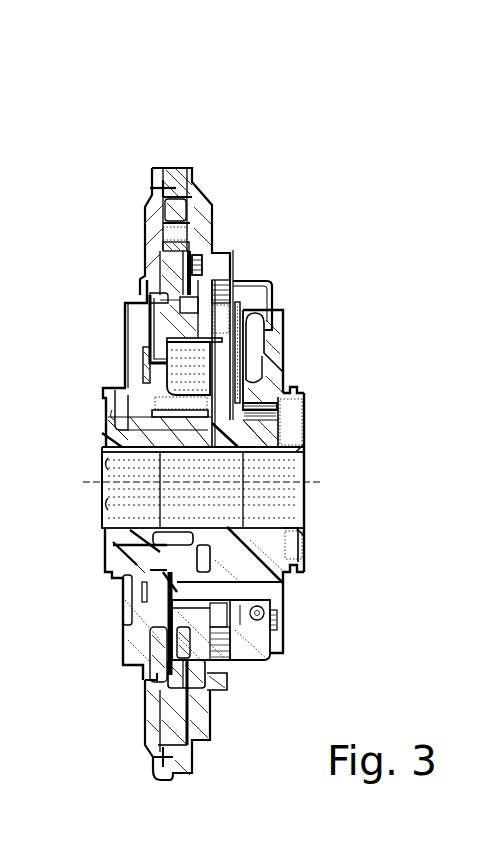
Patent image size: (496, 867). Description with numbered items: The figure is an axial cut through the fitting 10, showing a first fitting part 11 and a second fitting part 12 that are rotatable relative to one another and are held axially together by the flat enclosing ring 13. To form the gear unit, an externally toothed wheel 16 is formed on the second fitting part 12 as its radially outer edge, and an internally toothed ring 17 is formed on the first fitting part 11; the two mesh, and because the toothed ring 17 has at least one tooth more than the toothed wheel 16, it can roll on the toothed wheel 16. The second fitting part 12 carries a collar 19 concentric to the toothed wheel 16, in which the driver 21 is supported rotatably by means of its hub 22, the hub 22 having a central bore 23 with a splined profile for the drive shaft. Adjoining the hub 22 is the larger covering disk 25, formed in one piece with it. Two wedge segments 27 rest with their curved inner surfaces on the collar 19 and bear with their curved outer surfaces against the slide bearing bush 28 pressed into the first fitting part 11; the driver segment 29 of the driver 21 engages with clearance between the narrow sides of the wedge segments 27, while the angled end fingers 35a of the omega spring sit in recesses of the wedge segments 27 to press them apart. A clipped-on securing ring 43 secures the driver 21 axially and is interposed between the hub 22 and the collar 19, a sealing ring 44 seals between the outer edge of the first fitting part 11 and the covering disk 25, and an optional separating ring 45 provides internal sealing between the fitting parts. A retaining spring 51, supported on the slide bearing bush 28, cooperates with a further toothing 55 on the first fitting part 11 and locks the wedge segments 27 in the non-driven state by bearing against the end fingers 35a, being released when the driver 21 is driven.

The fitting 10 is at (322, 208).
The first fitting part 11 is at (253, 261).
The second fitting part 12 is at (140, 259).
The enclosing ring 13 is at (140, 187).
The externally toothed wheel 16 is at (180, 232).
The internally toothed ring 17 is at (145, 222).
The collar 19 is at (282, 419).
The driver 21 is at (318, 520).
The hub 22 is at (202, 440).
The bore 23 is at (113, 505).
The covering disk 25 is at (277, 340).
The wedge segments 27 is at (190, 375).
The slide bearing bush 28 is at (198, 603).
The driver segment 29 is at (200, 592).
The end fingers 35a is at (210, 370).
The securing ring 43 is at (133, 585).
The sealing ring 44 is at (270, 653).
The separating ring 45 is at (153, 312).
The retaining spring 51 is at (272, 313).
The toothing 55 is at (233, 290).